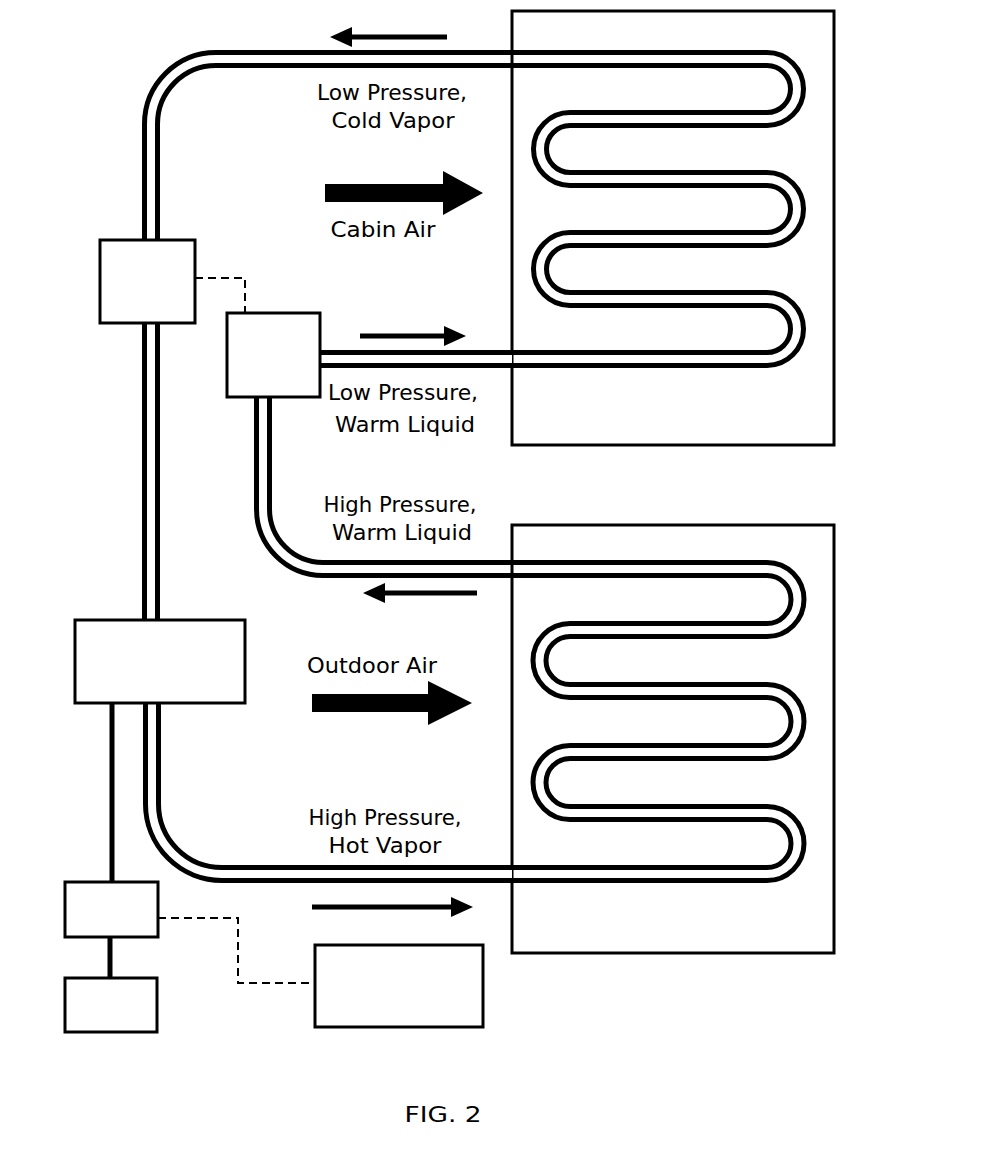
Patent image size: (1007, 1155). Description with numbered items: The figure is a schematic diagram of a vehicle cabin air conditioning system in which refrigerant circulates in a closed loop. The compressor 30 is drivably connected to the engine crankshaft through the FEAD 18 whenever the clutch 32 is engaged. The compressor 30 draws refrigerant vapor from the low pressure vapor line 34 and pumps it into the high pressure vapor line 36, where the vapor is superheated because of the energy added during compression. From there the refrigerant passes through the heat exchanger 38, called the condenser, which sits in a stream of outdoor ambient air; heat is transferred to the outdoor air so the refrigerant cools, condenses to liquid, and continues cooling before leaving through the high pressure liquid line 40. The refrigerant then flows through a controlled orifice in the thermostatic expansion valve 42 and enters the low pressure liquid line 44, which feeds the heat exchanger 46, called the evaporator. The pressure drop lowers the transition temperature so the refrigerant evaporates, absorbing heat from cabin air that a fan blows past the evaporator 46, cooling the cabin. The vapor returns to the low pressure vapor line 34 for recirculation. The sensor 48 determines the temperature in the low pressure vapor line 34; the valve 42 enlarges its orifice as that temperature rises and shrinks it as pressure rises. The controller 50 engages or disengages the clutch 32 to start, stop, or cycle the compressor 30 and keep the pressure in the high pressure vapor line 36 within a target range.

The FEAD 18 is at (157, 998).
The compressor 30 is at (178, 620).
The clutch 32 is at (95, 882).
The low pressure vapor line 34 is at (140, 430).
The high pressure vapor line 36 is at (272, 864).
The heat exchanger (condenser) 38 is at (705, 522).
The high pressure liquid line 40 is at (253, 452).
The Thermostatic eXpansion Valve (TXV) 42 is at (287, 312).
The low pressure liquid line 44 is at (490, 350).
The heat exchanger (evaporator) 46 is at (660, 445).
The temperature sensor 48 is at (135, 238).
The controller 50 is at (483, 980).